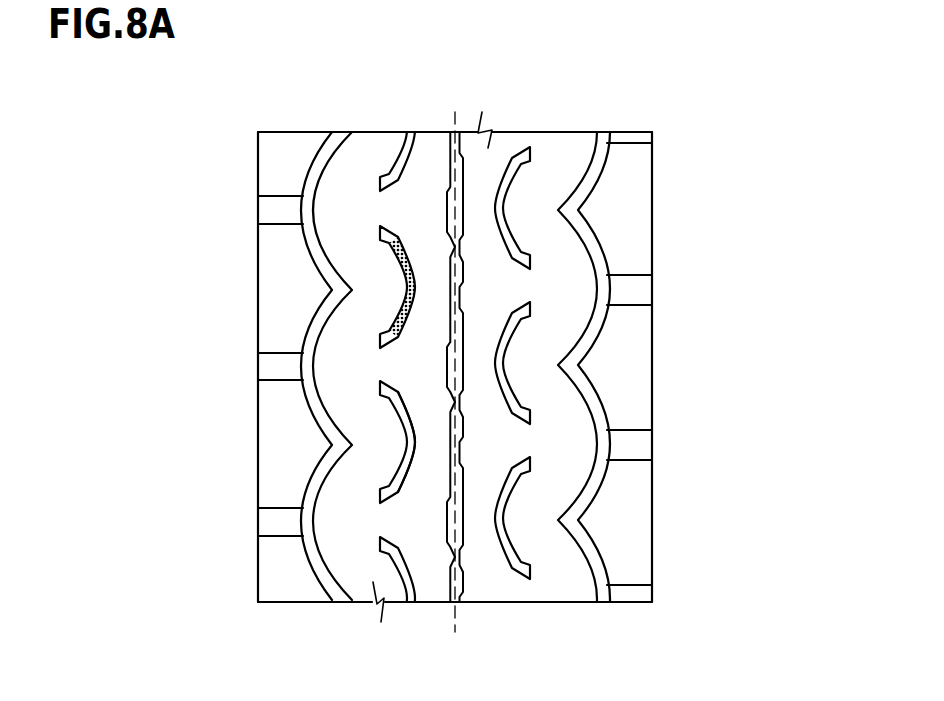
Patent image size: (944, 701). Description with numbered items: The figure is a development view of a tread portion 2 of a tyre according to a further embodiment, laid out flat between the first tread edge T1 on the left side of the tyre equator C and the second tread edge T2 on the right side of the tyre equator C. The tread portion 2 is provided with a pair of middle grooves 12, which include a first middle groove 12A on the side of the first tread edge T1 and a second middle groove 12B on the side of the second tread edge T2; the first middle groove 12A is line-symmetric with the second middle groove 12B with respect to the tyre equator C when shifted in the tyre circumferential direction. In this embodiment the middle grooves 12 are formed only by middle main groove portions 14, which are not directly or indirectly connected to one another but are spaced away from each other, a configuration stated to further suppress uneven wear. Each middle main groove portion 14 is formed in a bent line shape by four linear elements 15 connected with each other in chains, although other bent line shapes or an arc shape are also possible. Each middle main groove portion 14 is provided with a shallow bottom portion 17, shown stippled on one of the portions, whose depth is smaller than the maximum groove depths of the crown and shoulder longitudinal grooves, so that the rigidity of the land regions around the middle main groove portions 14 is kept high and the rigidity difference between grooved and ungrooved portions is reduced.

The tread portion 2 is at (642, 102).
The middle grooves 12 is at (390, 167).
The first middle groove 12A is at (305, 366).
The second middle groove 12B is at (526, 144).
The middle main groove portions 14 is at (523, 211).
The linear elements 15 is at (407, 427).
The shallow bottom portion 17 is at (508, 235).
The tyre equator C is at (456, 358).
The first tread edge T1 is at (258, 163).
The second tread edge T2 is at (652, 163).